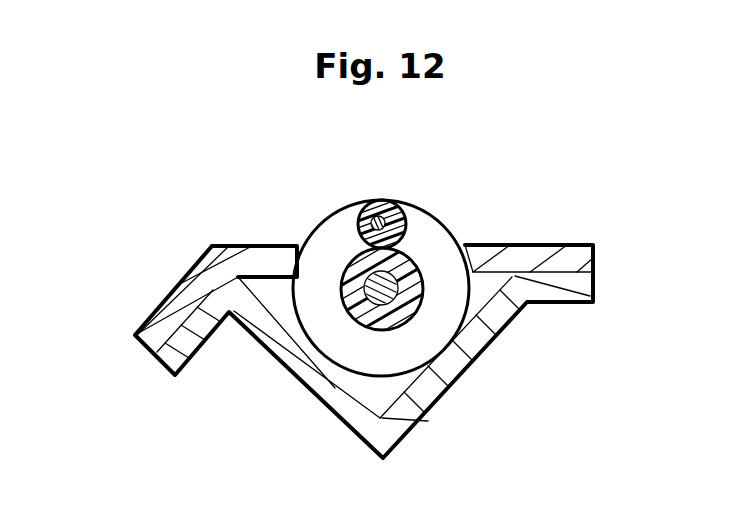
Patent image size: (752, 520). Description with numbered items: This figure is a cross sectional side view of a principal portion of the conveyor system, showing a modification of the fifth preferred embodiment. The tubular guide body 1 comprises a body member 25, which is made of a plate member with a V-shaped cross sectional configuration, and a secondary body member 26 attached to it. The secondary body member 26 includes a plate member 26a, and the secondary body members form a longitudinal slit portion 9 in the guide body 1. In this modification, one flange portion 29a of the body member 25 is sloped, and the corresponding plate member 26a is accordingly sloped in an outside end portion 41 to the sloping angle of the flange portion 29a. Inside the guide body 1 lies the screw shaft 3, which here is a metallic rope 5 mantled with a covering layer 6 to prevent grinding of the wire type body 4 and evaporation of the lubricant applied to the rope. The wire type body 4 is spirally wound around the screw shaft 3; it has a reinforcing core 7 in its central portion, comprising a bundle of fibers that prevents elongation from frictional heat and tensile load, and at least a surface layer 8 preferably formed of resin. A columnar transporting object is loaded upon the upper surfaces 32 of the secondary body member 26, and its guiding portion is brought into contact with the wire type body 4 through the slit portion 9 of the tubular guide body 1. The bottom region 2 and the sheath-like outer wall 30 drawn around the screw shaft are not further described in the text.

The tubular guide body 1 is at (553, 216).
The bottom plate portion 2 is at (410, 376).
The screw shaft 3 is at (360, 333).
The wire type body 4 is at (404, 218).
The metallic rope 5 is at (497, 342).
The covering layer 6 is at (345, 300).
The reinforcing core 7 is at (378, 212).
The surface layer 8 is at (408, 232).
The slit portion 9 is at (432, 243).
The body member 25 is at (461, 380).
The secondary body member 26 is at (574, 242).
The plate member 26a is at (169, 298).
The flange portion 29a is at (197, 352).
The sheath 30 is at (300, 263).
The upper surfaces 32 is at (268, 244).
The outside end portion 41 is at (150, 326).